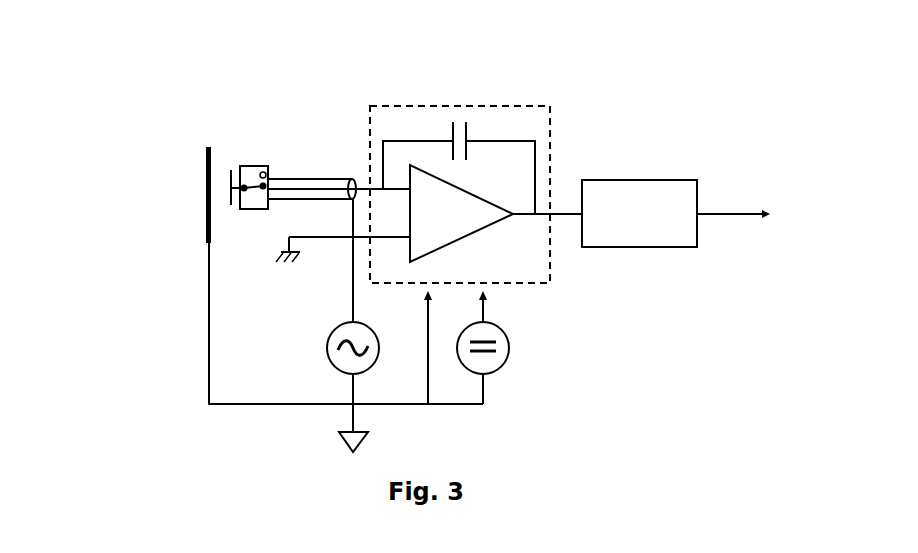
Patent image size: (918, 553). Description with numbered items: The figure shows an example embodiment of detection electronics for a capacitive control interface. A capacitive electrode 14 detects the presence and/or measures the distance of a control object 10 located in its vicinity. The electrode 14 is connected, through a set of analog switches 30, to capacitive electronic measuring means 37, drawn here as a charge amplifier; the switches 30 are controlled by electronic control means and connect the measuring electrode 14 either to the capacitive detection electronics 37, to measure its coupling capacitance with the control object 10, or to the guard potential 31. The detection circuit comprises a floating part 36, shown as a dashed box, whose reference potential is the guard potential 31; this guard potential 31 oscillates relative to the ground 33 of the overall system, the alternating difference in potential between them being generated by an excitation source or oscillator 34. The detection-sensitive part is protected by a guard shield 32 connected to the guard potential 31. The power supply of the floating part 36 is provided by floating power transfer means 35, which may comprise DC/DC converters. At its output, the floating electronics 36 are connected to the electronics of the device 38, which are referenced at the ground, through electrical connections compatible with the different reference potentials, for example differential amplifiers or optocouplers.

The control object 10 is at (205, 167).
The capacitive electrode 14 is at (230, 170).
The analog switch 30 is at (255, 165).
The guard potential 31 is at (273, 260).
The guard shield 32 is at (300, 178).
The ground 33 is at (339, 438).
The oscillator 34 is at (327, 348).
The floating power transfer means 35 is at (509, 348).
The floating part 36 is at (512, 106).
The capacitive electronic measuring means 37 is at (428, 103).
The electronics of the device 38 is at (642, 180).